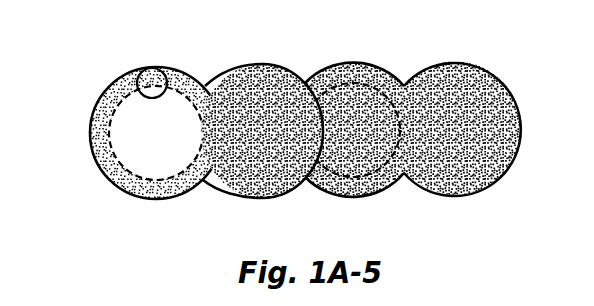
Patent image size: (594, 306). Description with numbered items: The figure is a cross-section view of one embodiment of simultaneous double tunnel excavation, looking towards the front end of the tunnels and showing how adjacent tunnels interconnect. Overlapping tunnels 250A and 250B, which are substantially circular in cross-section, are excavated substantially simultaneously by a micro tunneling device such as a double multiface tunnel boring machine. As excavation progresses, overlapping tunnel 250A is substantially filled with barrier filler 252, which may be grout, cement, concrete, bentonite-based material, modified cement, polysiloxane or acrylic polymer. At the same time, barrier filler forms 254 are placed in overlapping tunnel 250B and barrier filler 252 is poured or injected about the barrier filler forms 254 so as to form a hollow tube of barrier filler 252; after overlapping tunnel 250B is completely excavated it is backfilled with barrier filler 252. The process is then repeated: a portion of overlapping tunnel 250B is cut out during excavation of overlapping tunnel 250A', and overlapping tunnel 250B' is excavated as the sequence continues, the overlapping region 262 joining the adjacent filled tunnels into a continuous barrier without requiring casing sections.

The overlapping tunnel 250A is at (481, 103).
The overlapping tunnel 250B is at (369, 103).
The overlapping tunnel 250A' is at (249, 155).
The overlapping tunnel 250B' is at (143, 154).
The barrier filler 252 is at (473, 162).
The barrier filler forms 254 is at (142, 78).
The overlap region of spots 262 is at (252, 83).